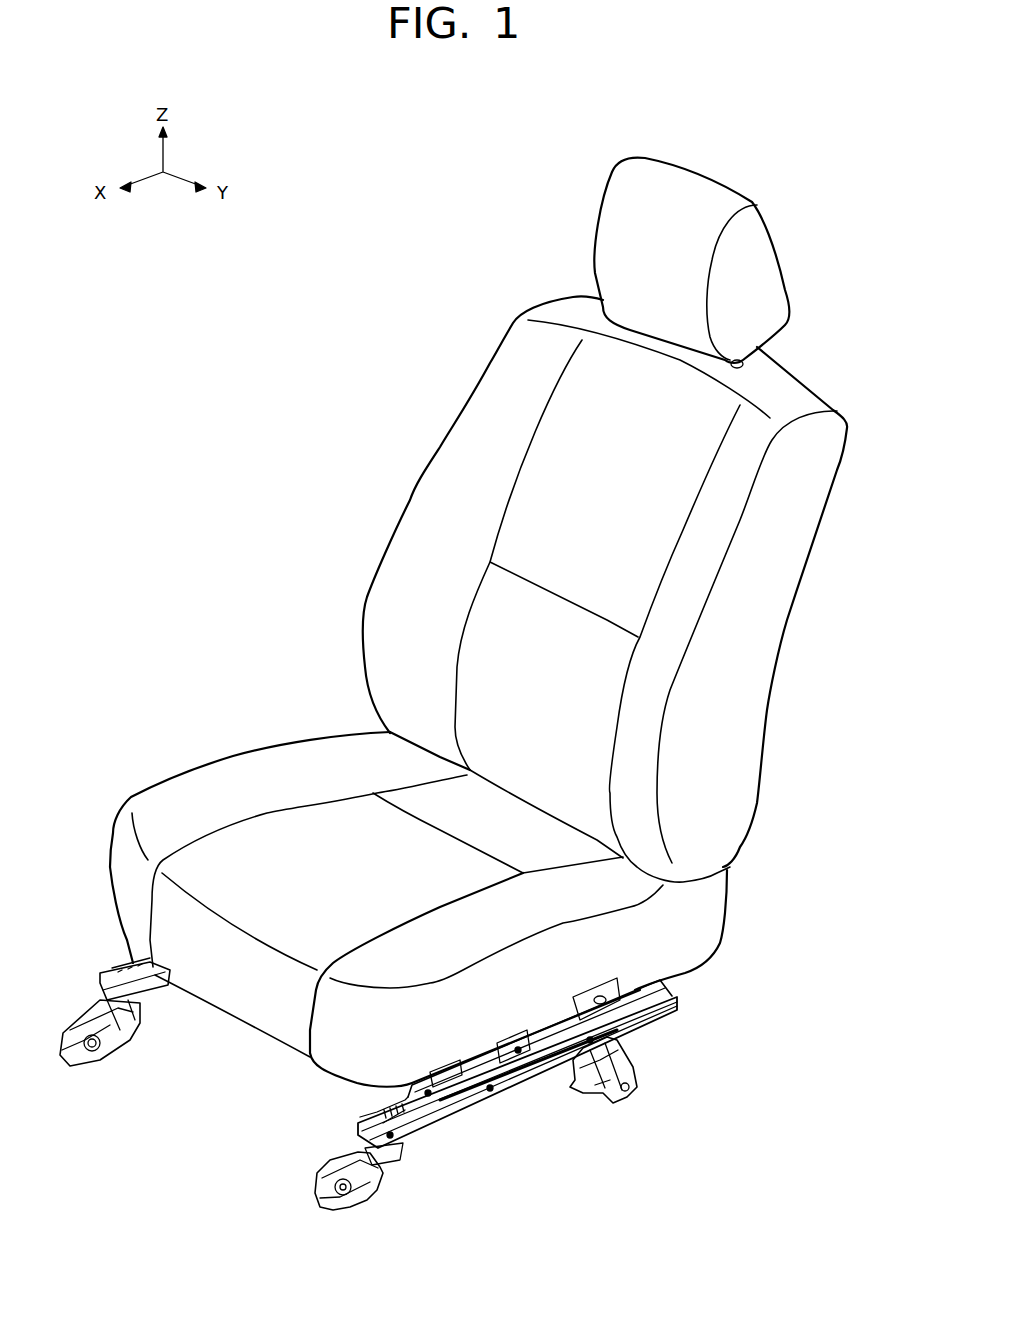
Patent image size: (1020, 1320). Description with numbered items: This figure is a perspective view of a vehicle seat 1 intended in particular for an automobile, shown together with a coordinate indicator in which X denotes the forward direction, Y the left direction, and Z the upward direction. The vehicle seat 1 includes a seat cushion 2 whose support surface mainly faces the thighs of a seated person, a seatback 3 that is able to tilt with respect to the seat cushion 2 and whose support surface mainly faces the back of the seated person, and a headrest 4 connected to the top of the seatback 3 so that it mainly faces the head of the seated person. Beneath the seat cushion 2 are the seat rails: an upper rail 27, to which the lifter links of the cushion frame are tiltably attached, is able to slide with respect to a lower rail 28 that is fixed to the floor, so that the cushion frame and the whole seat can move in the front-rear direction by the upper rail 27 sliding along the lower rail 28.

The vehicle seat 1 is at (755, 139).
The seat cushion 2 is at (243, 775).
The seatback 3 is at (463, 453).
The headrest 4 is at (610, 230).
The upper rail 27 is at (675, 993).
The lower rail 28 is at (153, 978).